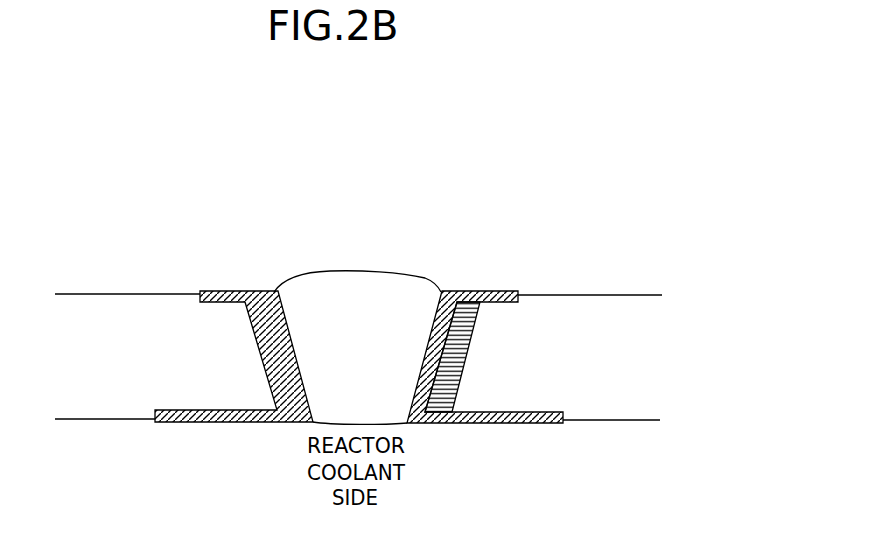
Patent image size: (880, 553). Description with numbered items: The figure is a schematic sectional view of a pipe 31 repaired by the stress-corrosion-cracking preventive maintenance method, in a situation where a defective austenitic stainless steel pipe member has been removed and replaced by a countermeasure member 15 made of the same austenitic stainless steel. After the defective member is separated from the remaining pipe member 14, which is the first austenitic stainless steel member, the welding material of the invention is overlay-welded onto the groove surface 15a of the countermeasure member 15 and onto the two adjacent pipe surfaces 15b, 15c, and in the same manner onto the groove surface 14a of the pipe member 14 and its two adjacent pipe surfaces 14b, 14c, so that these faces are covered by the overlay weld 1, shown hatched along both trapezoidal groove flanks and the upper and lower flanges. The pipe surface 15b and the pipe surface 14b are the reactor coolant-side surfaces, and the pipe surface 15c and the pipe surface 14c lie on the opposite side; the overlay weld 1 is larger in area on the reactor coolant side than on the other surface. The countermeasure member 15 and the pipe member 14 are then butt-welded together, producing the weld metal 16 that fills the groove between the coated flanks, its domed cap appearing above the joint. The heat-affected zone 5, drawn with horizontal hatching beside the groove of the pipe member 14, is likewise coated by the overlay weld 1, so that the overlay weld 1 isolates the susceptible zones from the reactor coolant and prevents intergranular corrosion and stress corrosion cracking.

The pipe 31 is at (653, 150).
The overlay weld 1 is at (210, 303).
The countermeasure member 15 is at (147, 298).
The groove surface of the countermeasure member 15a is at (300, 300).
The pipe surface of the countermeasure member 15b is at (233, 423).
The pipe surface of the countermeasure member 15c is at (228, 291).
The weld metal 16 is at (385, 272).
The pipe member 14 is at (590, 298).
The groove surface of the pipe member 14a is at (433, 300).
The pipe surface of the pipe member 14b is at (487, 424).
The pipe surface of the pipe member 14c is at (510, 291).
The heat-affected zone 5 is at (483, 291).